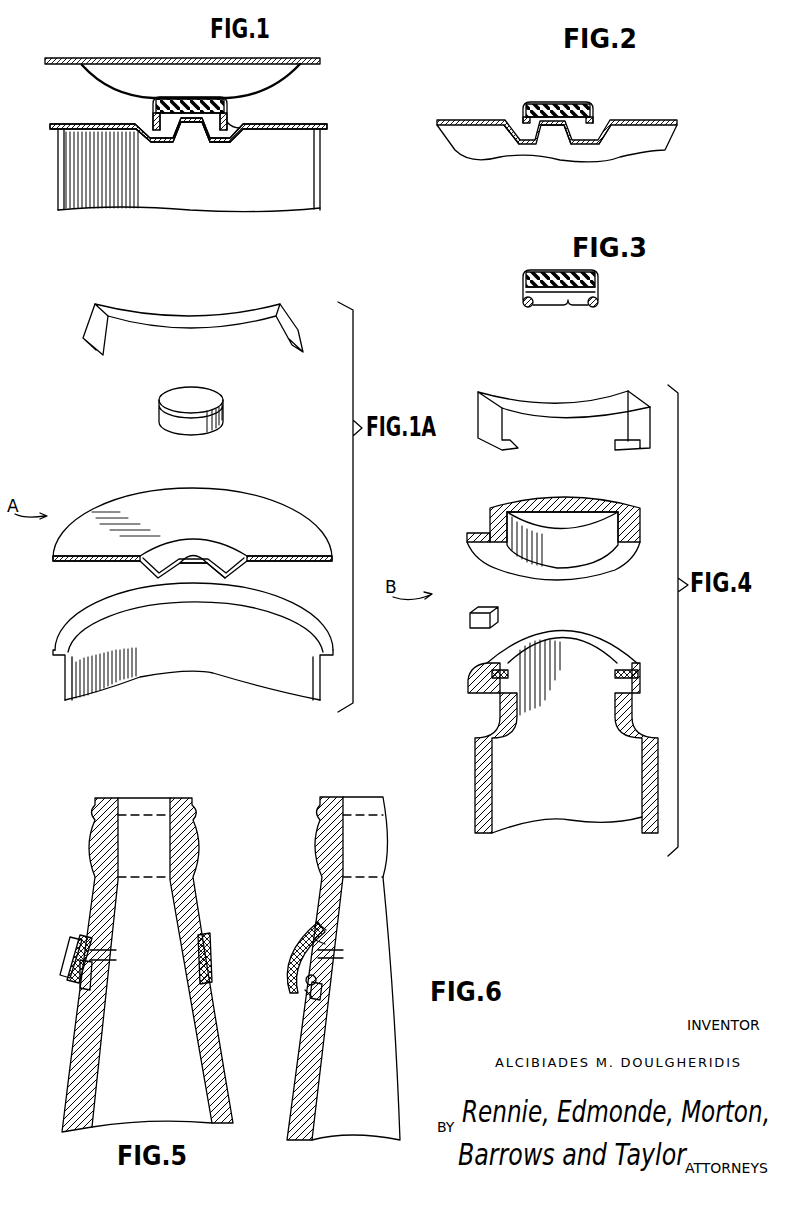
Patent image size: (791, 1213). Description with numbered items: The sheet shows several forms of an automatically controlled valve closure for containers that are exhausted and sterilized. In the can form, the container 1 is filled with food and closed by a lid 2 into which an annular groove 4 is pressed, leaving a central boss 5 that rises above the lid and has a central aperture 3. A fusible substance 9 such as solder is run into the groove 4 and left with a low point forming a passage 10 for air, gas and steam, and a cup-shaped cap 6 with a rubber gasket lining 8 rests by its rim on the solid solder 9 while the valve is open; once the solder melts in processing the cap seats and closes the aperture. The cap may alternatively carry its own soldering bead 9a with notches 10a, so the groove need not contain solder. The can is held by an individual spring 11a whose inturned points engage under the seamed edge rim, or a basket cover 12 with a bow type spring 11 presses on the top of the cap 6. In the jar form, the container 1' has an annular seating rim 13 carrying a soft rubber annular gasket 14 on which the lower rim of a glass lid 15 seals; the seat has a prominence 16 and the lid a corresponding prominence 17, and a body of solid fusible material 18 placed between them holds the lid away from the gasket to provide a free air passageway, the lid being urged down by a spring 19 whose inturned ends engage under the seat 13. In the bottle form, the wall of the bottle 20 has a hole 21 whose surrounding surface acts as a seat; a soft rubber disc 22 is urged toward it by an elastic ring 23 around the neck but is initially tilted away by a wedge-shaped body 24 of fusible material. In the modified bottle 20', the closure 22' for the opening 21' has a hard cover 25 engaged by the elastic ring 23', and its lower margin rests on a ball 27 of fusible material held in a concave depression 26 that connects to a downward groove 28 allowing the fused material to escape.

In FIG. 1A, the container 1 is at (193, 645).
In FIG. 4, the container 1' is at (566, 746).
In FIG. 1, the lid 2 is at (297, 123).
In FIG. 2, the lid 2 is at (650, 120).
In FIG. 1A, the lid 2 is at (213, 500).
In FIG. 1, the central aperture 3 is at (192, 130).
In FIG. 2, the central aperture 3 is at (555, 127).
In FIG. 1A, the central aperture 3 is at (190, 545).
In FIG. 1, the annular groove 4 is at (227, 143).
In FIG. 2, the annular groove 4 is at (590, 143).
In FIG. 1A, the annular groove 4 is at (152, 578).
In FIG. 1, the central boss 5 is at (203, 137).
In FIG. 1A, the central boss 5 is at (205, 543).
In FIG. 1, the cap 6 is at (153, 100).
In FIG. 2, the cap 6 is at (540, 101).
In FIG. 3, the cap 6 is at (610, 269).
In FIG. 1A, the cap 6 is at (223, 408).
In FIG. 1, the rubber gasket lining 8 is at (150, 118).
In FIG. 2, the rubber gasket lining 8 is at (523, 120).
In FIG. 1, the fusible substance 9 is at (150, 143).
In FIG. 2, the fusible substance 9 is at (515, 143).
In FIG. 1, the soldering bead 9a is at (233, 138).
In FIG. 2, the soldering bead 9a is at (602, 144).
In FIG. 3, the soldering bead 9a is at (523, 299).
In FIG. 1, the passage 10 is at (228, 123).
In FIG. 3, the notches 10a is at (573, 305).
In FIG. 1, the spring 11 is at (270, 78).
In FIG. 1A, the individual spring 11a is at (160, 328).
In FIG. 1, the basket cover 12 is at (73, 58).
In FIG. 4, the annular seating rim 13 is at (641, 683).
In FIG. 4, the annular gasket 14 is at (636, 668).
In FIG. 4, the glass lid 15 is at (600, 572).
In FIG. 4, the prominence 16 is at (470, 690).
In FIG. 4, the prominence 17 is at (480, 560).
In FIG. 4, the body of solid fusible material 18 is at (470, 628).
In FIG. 4, the spring 19 is at (575, 405).
In FIG. 5, the bottle 20 is at (160, 965).
In FIG. 6, the bottle 20' is at (343, 968).
In FIG. 5, the hole 21 is at (122, 946).
In FIG. 6, the opening 21' is at (351, 954).
In FIG. 5, the disc 22 is at (77, 941).
In FIG. 6, the closure 22' is at (348, 931).
In FIG. 5, the elastic ring 23 is at (130, 942).
In FIG. 6, the elastic ring 23' is at (291, 957).
In FIG. 5, the wedge-shaped body 24 is at (80, 990).
In FIG. 6, the cover 25 is at (318, 925).
In FIG. 6, the concave depression 26 is at (335, 1000).
In FIG. 6, the ball 27 is at (318, 982).
In FIG. 6, the groove 28 is at (312, 997).